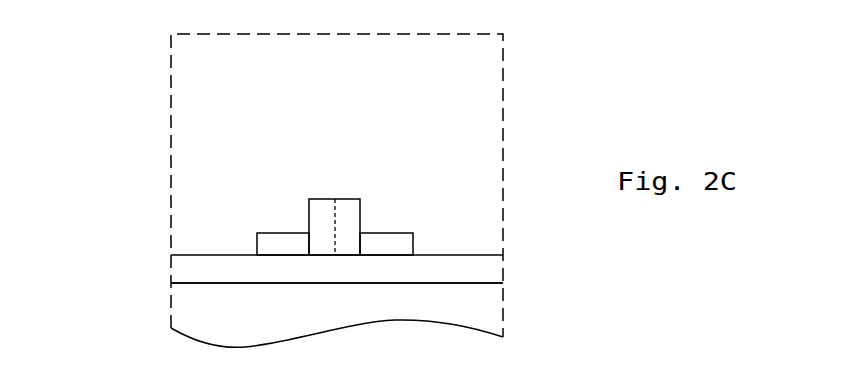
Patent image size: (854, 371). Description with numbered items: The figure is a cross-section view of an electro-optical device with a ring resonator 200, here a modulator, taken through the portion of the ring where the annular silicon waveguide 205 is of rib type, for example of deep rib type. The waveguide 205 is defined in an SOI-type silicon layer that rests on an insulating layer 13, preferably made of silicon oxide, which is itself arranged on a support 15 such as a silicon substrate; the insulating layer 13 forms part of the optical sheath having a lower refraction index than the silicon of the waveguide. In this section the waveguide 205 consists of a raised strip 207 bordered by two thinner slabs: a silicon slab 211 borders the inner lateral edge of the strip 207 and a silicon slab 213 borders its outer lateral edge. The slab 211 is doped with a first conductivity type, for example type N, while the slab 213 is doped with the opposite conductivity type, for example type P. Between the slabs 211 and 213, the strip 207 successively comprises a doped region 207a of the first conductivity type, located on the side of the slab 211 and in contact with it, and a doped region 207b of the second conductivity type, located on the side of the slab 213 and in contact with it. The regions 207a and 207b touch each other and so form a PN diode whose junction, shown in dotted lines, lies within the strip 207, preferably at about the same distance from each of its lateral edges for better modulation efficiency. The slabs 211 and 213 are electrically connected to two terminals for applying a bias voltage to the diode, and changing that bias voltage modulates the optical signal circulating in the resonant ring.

The electro-optical device with a ring resonator 200 is at (171, 70).
The insulating layer 13 is at (488, 266).
The support 15 is at (488, 312).
The annular silicon waveguide 205 is at (350, 190).
The strip 207 is at (388, 190).
The doped region of the first conductivity type 207a is at (318, 210).
The doped region of the second conductivity type 207b is at (343, 207).
The silicon slab 211 is at (259, 233).
The silicon slab 213 is at (404, 233).